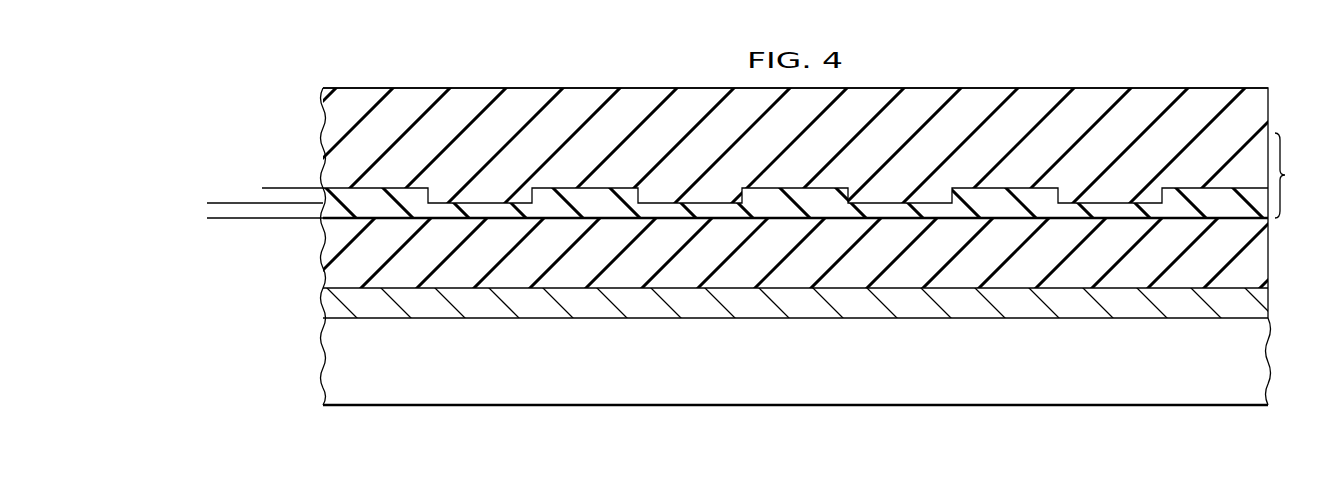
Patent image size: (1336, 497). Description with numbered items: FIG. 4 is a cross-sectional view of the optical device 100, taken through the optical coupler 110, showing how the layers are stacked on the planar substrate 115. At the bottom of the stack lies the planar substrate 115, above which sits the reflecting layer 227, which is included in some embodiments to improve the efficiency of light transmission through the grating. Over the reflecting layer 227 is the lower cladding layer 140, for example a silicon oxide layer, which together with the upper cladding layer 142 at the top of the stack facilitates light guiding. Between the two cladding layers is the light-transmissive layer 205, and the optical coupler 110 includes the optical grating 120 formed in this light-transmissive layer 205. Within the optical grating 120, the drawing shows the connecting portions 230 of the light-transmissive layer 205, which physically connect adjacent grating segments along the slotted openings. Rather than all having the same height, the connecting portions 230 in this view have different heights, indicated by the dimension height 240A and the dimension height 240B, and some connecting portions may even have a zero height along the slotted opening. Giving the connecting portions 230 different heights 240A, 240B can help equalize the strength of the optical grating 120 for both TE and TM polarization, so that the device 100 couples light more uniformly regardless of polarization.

The optical device 100 is at (258, 286).
The optical coupler 110 is at (1248, 73).
The planar substrate 115 is at (1272, 353).
The optical grating 120 is at (563, 139).
The lower cladding layer 140 is at (1262, 265).
The upper cladding layer 142 is at (428, 95).
The light-transmissive layer 205 is at (1302, 175).
The reflecting layer 227 is at (325, 303).
The connecting portions 230 is at (670, 212).
The height 240A is at (213, 226).
The height 240B is at (268, 226).